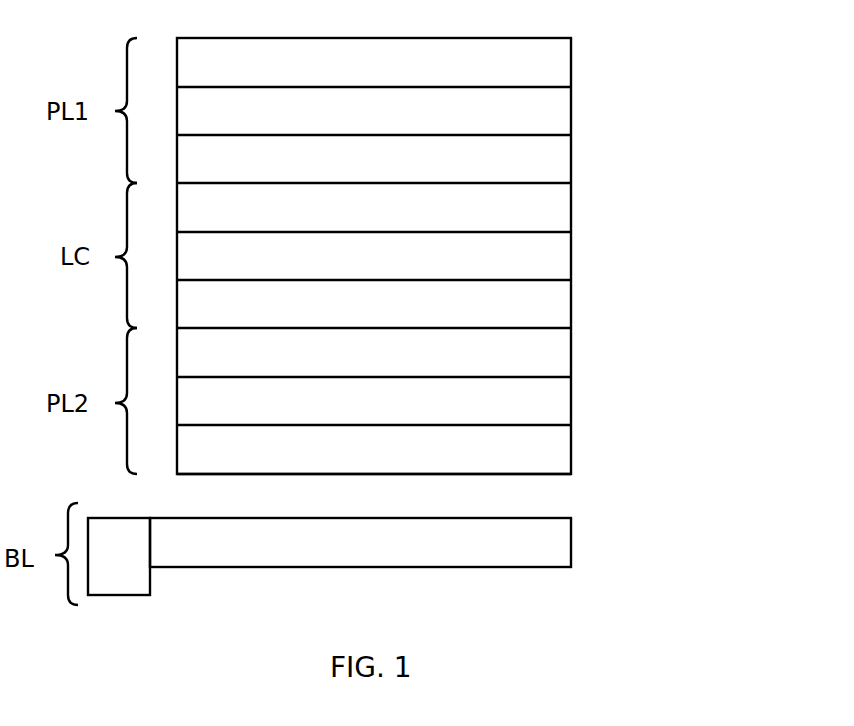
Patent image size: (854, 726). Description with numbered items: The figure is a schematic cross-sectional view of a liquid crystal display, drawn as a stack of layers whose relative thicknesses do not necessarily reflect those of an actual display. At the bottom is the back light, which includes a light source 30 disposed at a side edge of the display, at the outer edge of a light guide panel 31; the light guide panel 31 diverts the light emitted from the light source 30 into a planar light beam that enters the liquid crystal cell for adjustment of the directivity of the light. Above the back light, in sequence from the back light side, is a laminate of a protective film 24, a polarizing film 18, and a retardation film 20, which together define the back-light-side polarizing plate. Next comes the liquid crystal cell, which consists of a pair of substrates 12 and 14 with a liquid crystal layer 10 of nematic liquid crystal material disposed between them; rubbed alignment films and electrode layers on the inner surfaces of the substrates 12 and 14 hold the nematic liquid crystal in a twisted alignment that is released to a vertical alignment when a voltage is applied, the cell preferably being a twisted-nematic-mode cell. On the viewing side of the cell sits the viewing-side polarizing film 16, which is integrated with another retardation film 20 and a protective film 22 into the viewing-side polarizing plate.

The protective film 22 is at (527, 63).
The viewing-side polarizing film 16 is at (527, 110).
The retardation film 20 is at (527, 159).
The substrate 12 is at (527, 208).
The liquid crystal layer 10 is at (527, 256).
The substrate 14 is at (527, 305).
The polarizing film 18 is at (527, 402).
The protective film 24 is at (527, 451).
The light guide panel 31 is at (527, 541).
The light source 30 is at (125, 579).